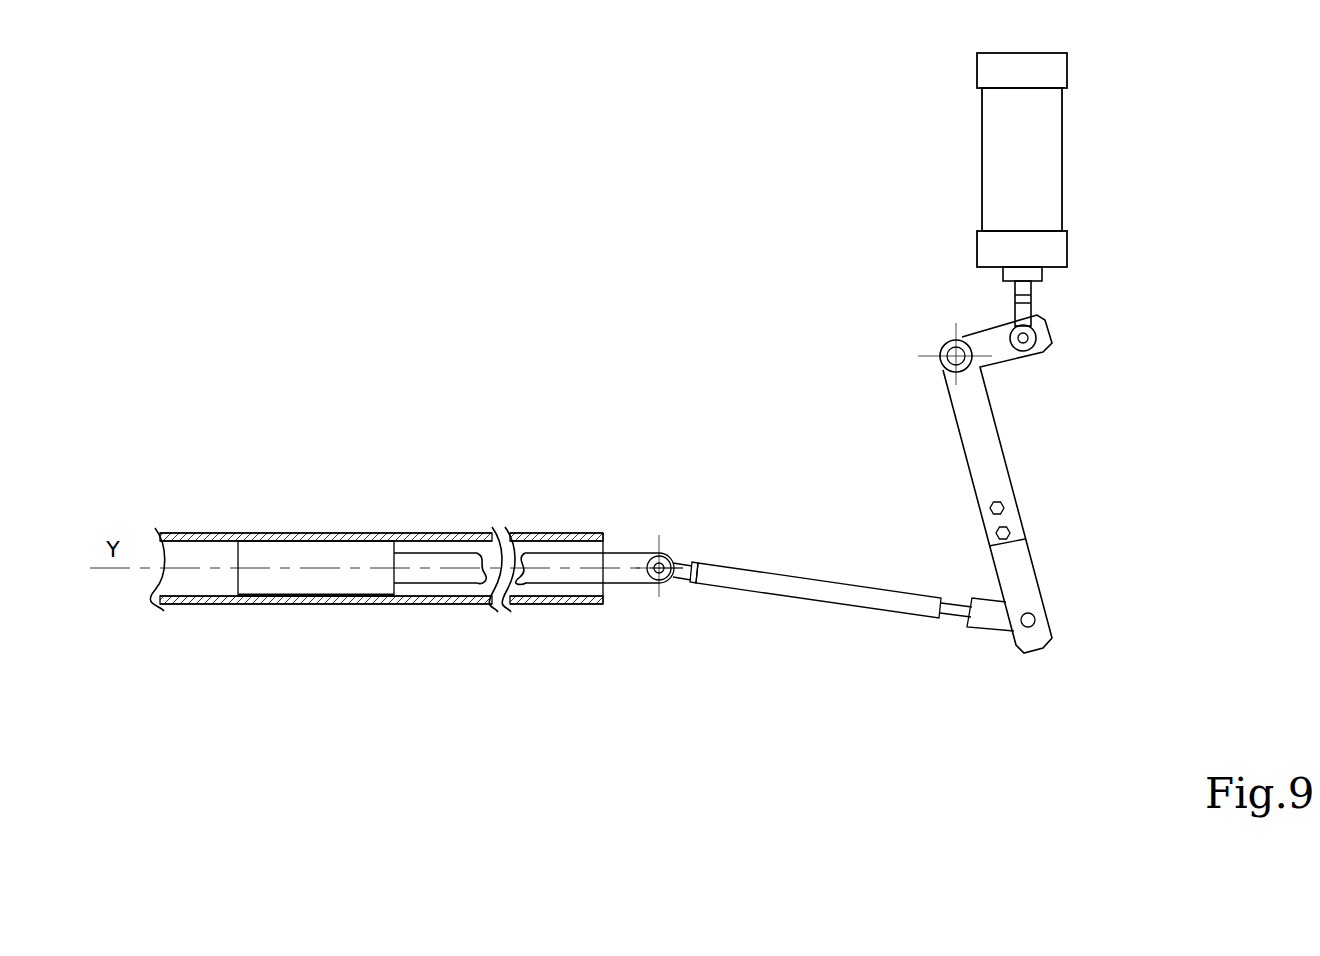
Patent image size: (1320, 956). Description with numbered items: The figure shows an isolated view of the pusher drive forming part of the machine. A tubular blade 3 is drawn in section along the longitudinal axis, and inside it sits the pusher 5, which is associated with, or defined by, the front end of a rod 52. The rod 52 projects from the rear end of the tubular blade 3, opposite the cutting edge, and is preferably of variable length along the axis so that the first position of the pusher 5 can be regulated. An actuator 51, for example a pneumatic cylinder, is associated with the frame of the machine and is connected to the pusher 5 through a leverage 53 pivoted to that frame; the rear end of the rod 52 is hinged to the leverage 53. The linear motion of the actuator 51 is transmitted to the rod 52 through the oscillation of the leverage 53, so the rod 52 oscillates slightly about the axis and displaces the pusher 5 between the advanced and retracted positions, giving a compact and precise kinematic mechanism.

The tubular blade 3 is at (223, 538).
The pusher 5 is at (312, 553).
The rod 52 is at (435, 562).
The actuator 51 is at (1005, 164).
The leverage 53 is at (973, 435).